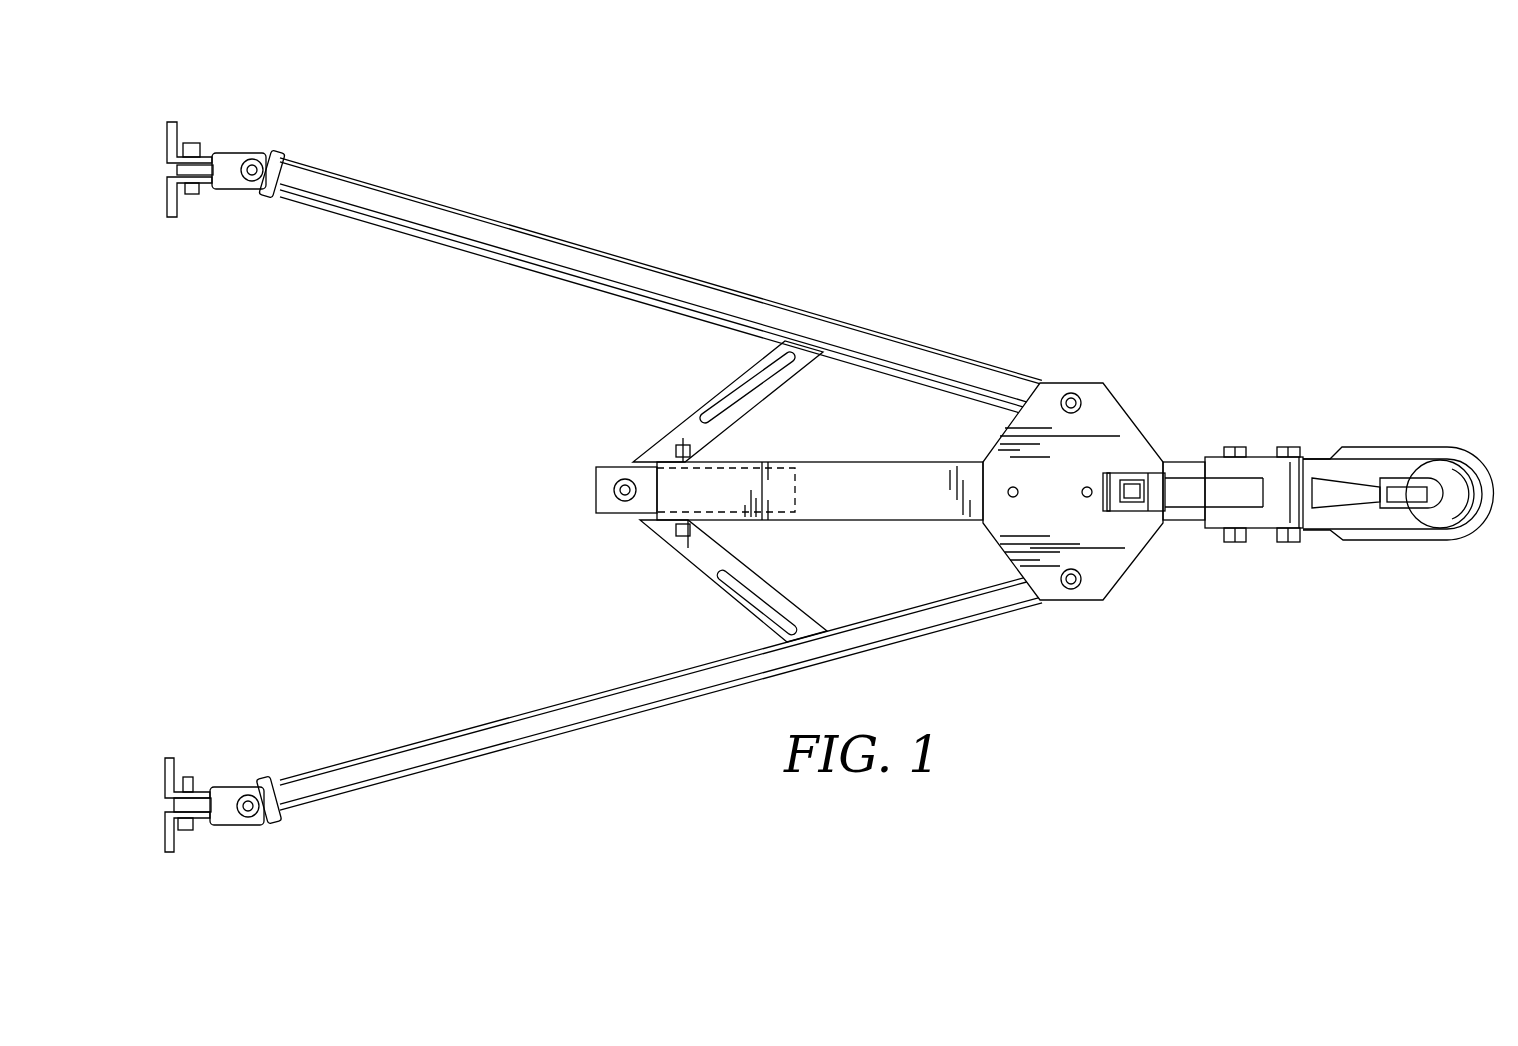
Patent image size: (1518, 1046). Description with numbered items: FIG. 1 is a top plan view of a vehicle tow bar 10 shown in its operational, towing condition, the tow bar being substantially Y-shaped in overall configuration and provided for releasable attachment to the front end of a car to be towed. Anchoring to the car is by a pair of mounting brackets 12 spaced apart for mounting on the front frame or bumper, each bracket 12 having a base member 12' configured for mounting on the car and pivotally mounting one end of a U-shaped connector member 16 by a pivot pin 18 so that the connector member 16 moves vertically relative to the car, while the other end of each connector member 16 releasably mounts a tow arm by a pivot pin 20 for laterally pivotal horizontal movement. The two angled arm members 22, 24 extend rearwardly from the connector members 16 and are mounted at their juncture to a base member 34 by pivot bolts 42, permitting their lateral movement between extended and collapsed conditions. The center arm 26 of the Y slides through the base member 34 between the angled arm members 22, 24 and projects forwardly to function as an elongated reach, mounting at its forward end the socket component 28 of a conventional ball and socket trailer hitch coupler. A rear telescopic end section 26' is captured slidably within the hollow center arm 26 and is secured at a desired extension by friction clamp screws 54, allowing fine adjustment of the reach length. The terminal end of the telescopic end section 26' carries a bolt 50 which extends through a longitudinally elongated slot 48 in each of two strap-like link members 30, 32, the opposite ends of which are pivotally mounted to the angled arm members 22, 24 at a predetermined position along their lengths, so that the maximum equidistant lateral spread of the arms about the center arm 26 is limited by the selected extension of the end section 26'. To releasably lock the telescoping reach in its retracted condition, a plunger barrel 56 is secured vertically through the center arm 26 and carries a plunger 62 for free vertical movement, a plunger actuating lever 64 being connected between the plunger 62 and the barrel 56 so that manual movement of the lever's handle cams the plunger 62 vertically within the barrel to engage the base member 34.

The vehicle tow bar 10 is at (1022, 270).
The mounting bracket 12 is at (266, 409).
The base member 12' is at (182, 485).
The connector member 16 is at (218, 176).
The pivot pin 18 is at (200, 200).
The pivot pin 20 is at (253, 180).
The angled arm member 22 is at (535, 705).
The angled arm member 24 is at (555, 275).
The center arm 26 is at (955, 464).
The rear telescopic end section 26' is at (701, 485).
The socket component 28 is at (1348, 512).
The link member 30 is at (793, 598).
The link member 32 is at (763, 400).
The base member 34 is at (1115, 548).
The pivot bolt 42 is at (1083, 403).
The slot 48 is at (732, 393).
The bolt 50 is at (625, 497).
The friction clamp screw 54 is at (686, 443).
The plunger barrel 56 is at (1165, 494).
The plunger 62 is at (1132, 483).
The plunger actuating lever 64 is at (1245, 497).